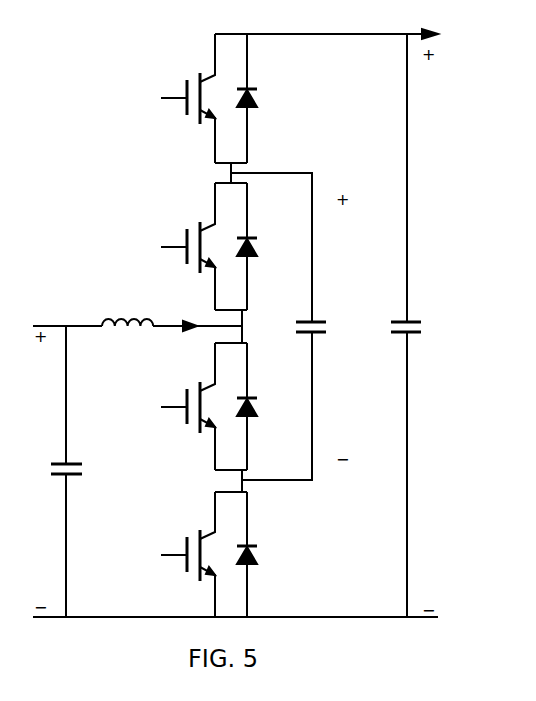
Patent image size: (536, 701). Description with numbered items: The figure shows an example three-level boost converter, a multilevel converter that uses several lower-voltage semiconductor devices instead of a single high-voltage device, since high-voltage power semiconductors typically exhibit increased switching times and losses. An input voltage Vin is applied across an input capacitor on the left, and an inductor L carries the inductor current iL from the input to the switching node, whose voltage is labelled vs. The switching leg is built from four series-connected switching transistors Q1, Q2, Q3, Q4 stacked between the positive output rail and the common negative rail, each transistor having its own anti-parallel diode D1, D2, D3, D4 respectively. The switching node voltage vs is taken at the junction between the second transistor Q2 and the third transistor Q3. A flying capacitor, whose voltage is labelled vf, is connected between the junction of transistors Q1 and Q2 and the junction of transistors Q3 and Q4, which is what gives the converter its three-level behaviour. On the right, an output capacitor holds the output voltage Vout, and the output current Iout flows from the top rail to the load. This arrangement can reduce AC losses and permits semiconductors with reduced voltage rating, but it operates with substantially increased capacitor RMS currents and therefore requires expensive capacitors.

The first switching transistor Q1 is at (194, 98).
The second switching transistor Q2 is at (194, 246).
The third switching transistor Q3 is at (194, 406).
The fourth switching transistor Q4 is at (194, 554).
The first anti-parallel diode D1 is at (258, 98).
The second anti-parallel diode D2 is at (258, 246).
The third anti-parallel diode D3 is at (258, 406).
The fourth anti-parallel diode D4 is at (258, 554).
The inductor L is at (127, 310).
The input voltage Vin is at (53, 472).
The output voltage Vout is at (417, 314).
The flying capacitor voltage vf is at (321, 328).
The switching node voltage vs is at (252, 327).
The inductor current iL is at (178, 315).
The output current Iout is at (422, 23).